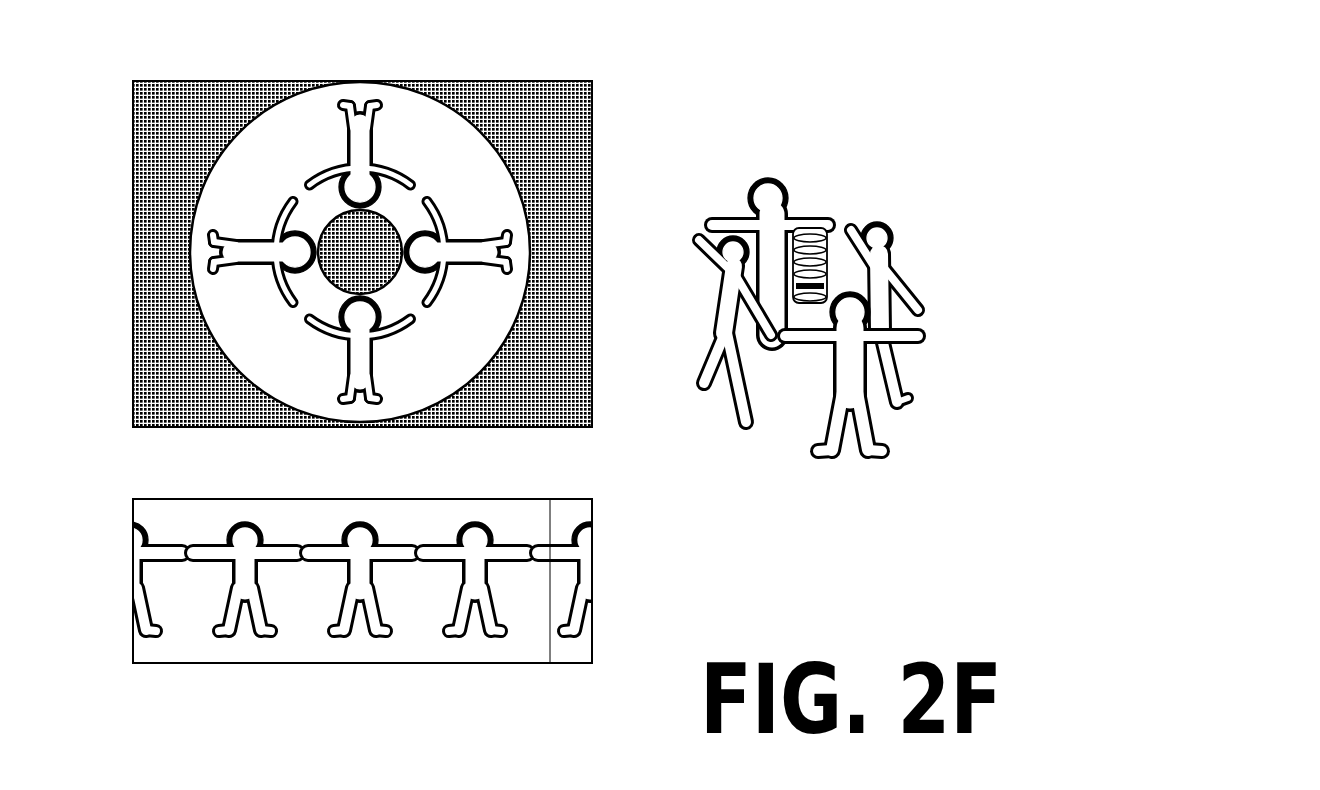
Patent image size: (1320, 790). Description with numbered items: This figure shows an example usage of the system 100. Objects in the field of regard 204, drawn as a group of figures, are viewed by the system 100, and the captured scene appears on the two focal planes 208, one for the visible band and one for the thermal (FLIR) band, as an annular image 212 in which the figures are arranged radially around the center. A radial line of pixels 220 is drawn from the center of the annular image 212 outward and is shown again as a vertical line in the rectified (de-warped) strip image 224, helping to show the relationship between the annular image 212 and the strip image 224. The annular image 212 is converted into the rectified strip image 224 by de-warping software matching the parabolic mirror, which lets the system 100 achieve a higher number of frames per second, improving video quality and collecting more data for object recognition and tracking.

The system 100 is at (357, 259).
The focal planes 208 is at (634, 137).
The annular image 212 is at (528, 231).
The objects in the field of regard 204 is at (897, 270).
The radial line of pixels 220 is at (547, 536).
The rectified (de-warped) strip image 224 is at (597, 498).